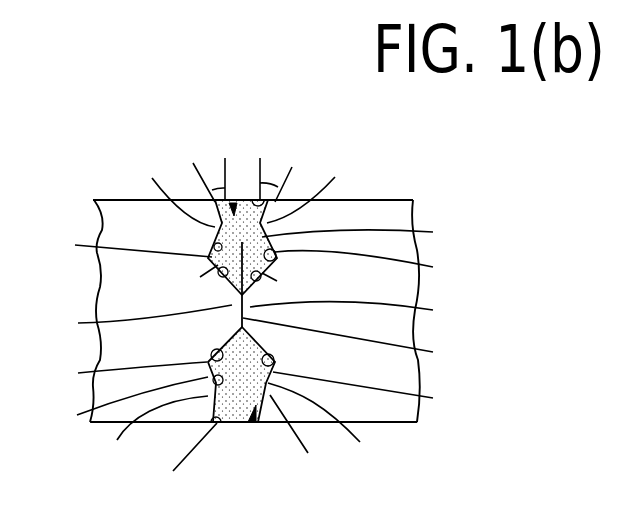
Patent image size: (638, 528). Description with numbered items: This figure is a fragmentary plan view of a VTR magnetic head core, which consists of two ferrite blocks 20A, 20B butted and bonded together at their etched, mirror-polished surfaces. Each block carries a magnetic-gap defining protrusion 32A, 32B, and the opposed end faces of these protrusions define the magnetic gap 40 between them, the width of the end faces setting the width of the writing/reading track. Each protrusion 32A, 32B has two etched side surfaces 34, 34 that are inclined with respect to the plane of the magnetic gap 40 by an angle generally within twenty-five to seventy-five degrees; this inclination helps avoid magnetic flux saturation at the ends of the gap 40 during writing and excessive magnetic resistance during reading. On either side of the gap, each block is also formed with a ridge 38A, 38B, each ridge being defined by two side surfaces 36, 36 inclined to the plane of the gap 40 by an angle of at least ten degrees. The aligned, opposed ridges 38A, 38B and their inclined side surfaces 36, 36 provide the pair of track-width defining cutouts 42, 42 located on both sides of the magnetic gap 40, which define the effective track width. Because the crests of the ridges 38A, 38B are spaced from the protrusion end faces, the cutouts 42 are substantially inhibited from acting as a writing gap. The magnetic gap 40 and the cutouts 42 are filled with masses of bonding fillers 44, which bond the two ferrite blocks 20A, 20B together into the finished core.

The ferrite block 20A is at (117, 215).
The ferrite block 20B is at (398, 207).
The magnetic-gap defining protrusion 32A is at (125, 323).
The magnetic-gap defining protrusion 32B is at (372, 312).
The side surfaces 34 is at (258, 335).
The inclined side surfaces 36 is at (248, 202).
The ridge 38A is at (148, 312).
The ridge 38B is at (330, 319).
The magnetic gap 40 is at (357, 345).
The track-width defining cutouts 42 is at (270, 487).
The bonding fillers 44 is at (237, 383).